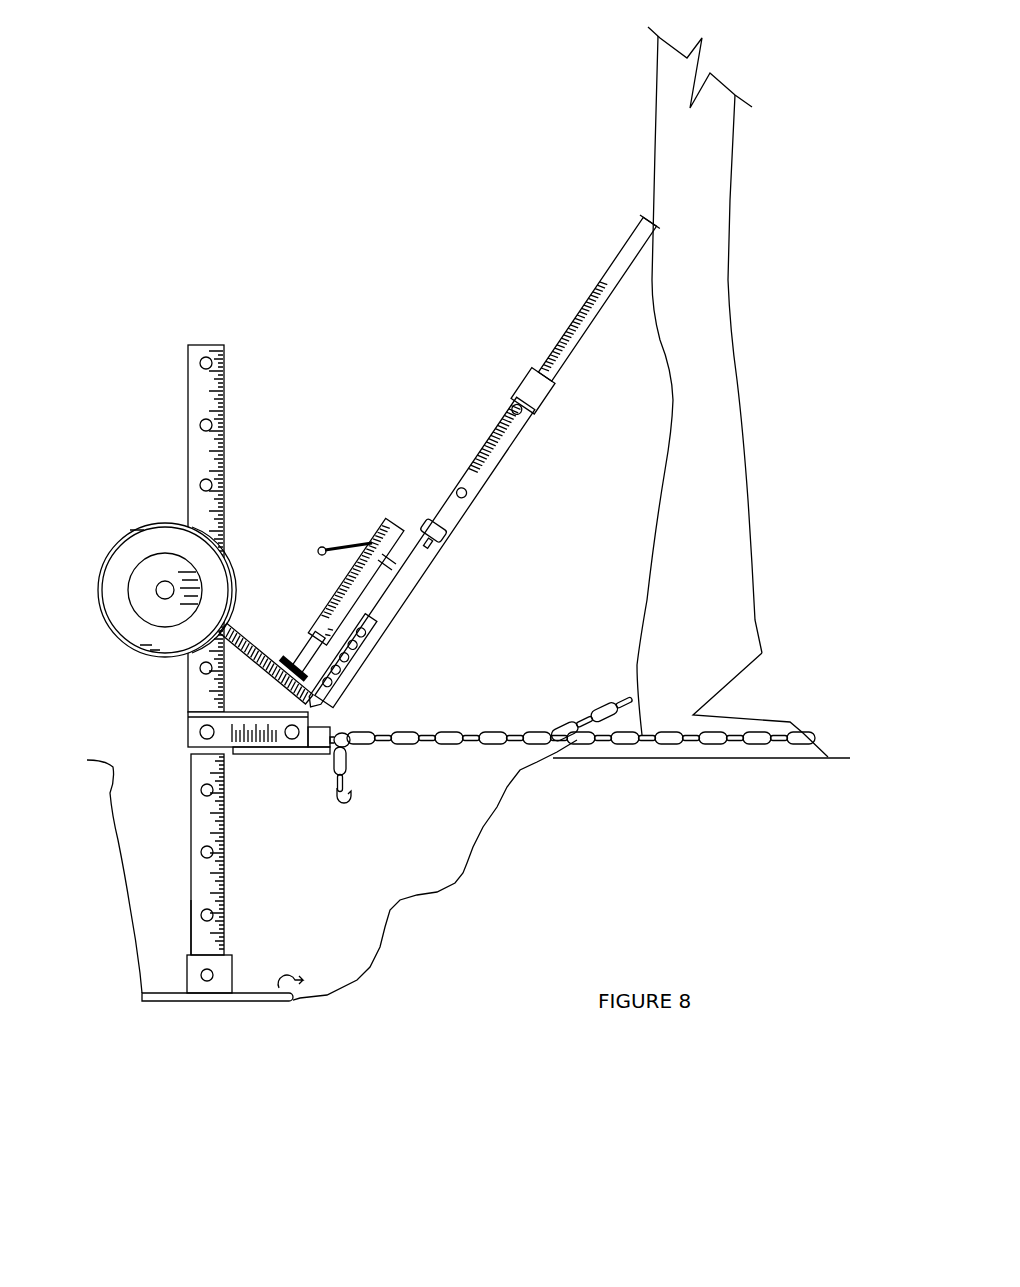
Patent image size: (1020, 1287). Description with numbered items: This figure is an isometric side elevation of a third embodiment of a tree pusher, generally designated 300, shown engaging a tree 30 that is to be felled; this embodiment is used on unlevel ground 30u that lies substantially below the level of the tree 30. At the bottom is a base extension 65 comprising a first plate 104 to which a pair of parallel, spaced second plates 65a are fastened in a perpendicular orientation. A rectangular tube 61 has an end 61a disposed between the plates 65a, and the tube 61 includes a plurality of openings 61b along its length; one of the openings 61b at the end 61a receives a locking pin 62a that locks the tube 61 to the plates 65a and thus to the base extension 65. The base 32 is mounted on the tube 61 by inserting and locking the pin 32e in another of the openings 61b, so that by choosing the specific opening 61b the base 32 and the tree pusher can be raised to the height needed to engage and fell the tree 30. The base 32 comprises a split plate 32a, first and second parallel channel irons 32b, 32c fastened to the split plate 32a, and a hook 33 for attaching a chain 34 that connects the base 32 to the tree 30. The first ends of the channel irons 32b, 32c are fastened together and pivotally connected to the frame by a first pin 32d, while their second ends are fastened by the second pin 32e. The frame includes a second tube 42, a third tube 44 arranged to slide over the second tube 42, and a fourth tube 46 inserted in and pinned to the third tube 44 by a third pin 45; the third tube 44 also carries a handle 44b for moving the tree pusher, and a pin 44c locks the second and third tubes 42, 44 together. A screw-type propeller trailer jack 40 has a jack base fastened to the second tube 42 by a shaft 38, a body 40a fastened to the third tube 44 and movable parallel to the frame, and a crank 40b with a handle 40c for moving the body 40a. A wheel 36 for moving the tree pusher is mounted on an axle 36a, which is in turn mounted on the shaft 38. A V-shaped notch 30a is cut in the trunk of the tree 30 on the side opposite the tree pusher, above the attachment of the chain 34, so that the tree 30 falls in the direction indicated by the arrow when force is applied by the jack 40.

The tree pusher 300 is at (367, 286).
The axle 36a is at (165, 588).
The wheel 36 is at (228, 560).
The shaft 38 is at (267, 665).
The screw-type propeller trailer jack 40 is at (294, 622).
The body 40a is at (362, 545).
The crank 40b is at (397, 550).
The handle 40c is at (318, 549).
The second rectangular tube 42 is at (333, 693).
The third rectangular tube 44 is at (405, 583).
The handle 44b is at (462, 497).
The pin 44c is at (432, 550).
The third pin 45 is at (515, 420).
The fourth rectangular tube 46 is at (540, 383).
The tree 30 is at (737, 381).
The V-shaped notch 30a is at (747, 703).
The ground surface 30u is at (462, 877).
The base 32 is at (320, 746).
The split plate 32a is at (299, 754).
The first channel iron 32b is at (260, 733).
The second channel iron 32c is at (230, 752).
The first pin 32d is at (329, 715).
The second pin 32e is at (200, 732).
The hook 33 is at (355, 745).
The chain 34 is at (663, 750).
The rectangular tube 61 is at (177, 860).
The end 61a is at (197, 933).
The openings 61b is at (207, 850).
The base extension 65 is at (242, 985).
The second plates 65a is at (232, 975).
The locking pin 62a is at (208, 977).
The first plate 104 is at (245, 1003).